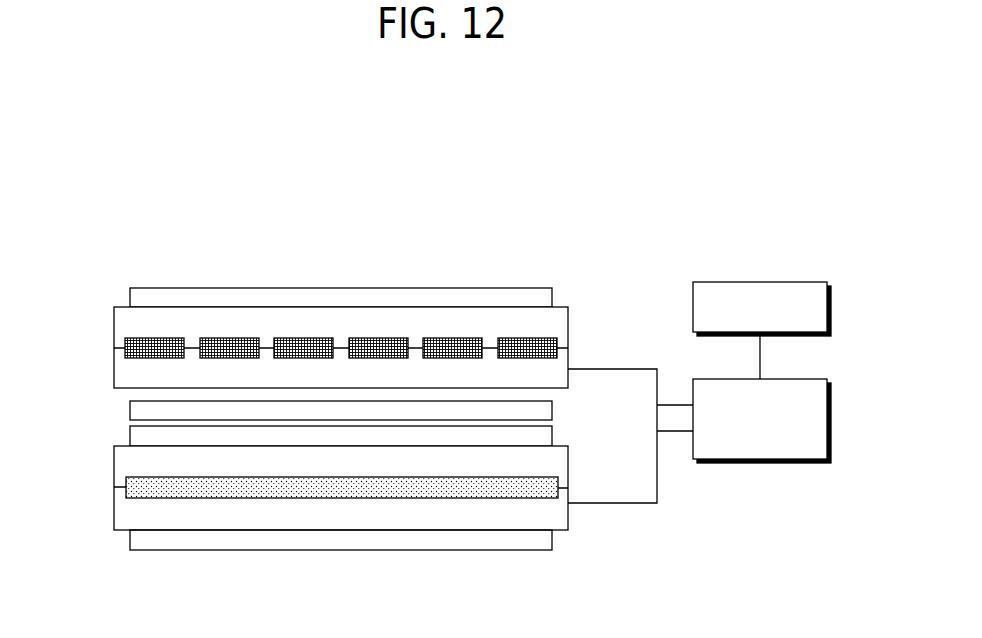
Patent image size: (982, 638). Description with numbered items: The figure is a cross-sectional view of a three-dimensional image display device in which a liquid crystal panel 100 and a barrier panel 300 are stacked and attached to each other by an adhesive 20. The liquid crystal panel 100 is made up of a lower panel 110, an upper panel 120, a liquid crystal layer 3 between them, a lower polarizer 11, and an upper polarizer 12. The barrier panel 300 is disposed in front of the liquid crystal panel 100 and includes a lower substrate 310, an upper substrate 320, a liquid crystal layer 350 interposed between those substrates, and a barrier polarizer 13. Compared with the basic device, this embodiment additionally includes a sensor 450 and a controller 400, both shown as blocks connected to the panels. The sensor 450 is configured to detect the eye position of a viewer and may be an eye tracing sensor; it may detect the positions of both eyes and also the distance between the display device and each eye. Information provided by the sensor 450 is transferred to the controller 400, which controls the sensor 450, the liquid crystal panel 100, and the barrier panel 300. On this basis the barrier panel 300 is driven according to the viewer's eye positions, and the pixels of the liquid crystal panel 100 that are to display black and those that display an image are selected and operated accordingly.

The barrier panel 300 is at (310, 309).
The barrier polarizer 13 is at (403, 298).
The upper substrate 320 is at (302, 318).
The lower substrate 310 is at (157, 373).
The liquid crystal layer 350 is at (227, 348).
The adhesive 20 is at (130, 410).
The liquid crystal panel 100 is at (309, 521).
The upper polarizer 12 is at (183, 437).
The lower panel 110 is at (438, 513).
The upper panel 120 is at (268, 460).
The liquid crystal layer 3 is at (347, 490).
The lower polarizer 11 is at (517, 537).
The controller 400 is at (760, 462).
The sensor 450 is at (762, 282).